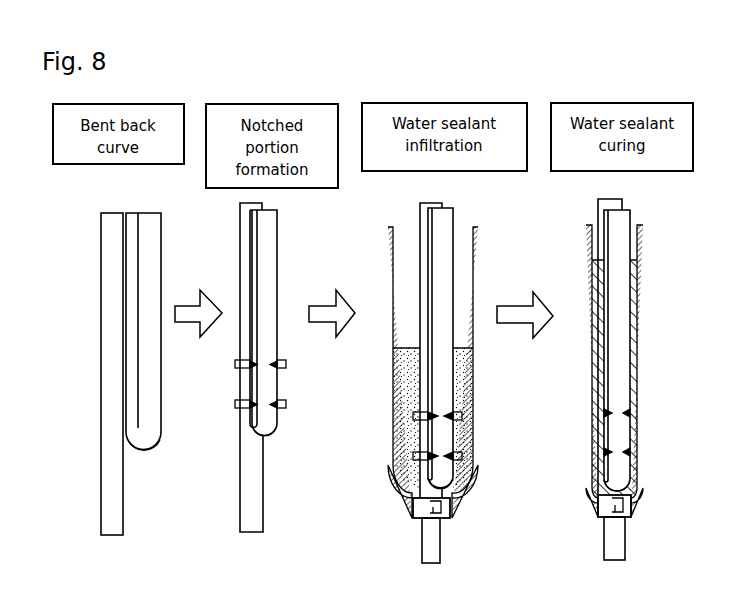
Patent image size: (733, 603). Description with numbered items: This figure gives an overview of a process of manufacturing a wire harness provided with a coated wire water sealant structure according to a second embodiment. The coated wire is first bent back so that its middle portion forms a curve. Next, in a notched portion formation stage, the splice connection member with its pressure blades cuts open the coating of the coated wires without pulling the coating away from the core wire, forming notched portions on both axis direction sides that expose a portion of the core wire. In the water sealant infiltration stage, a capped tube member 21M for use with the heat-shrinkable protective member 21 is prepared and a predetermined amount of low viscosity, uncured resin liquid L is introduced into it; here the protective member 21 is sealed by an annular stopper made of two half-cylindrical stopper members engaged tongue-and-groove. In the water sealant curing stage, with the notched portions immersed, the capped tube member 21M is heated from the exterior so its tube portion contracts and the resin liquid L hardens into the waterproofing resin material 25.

The protective member 21 is at (655, 311).
The capped tube member 21M is at (398, 513).
The resin material 25 is at (645, 383).
The uncured resin liquid L is at (462, 340).